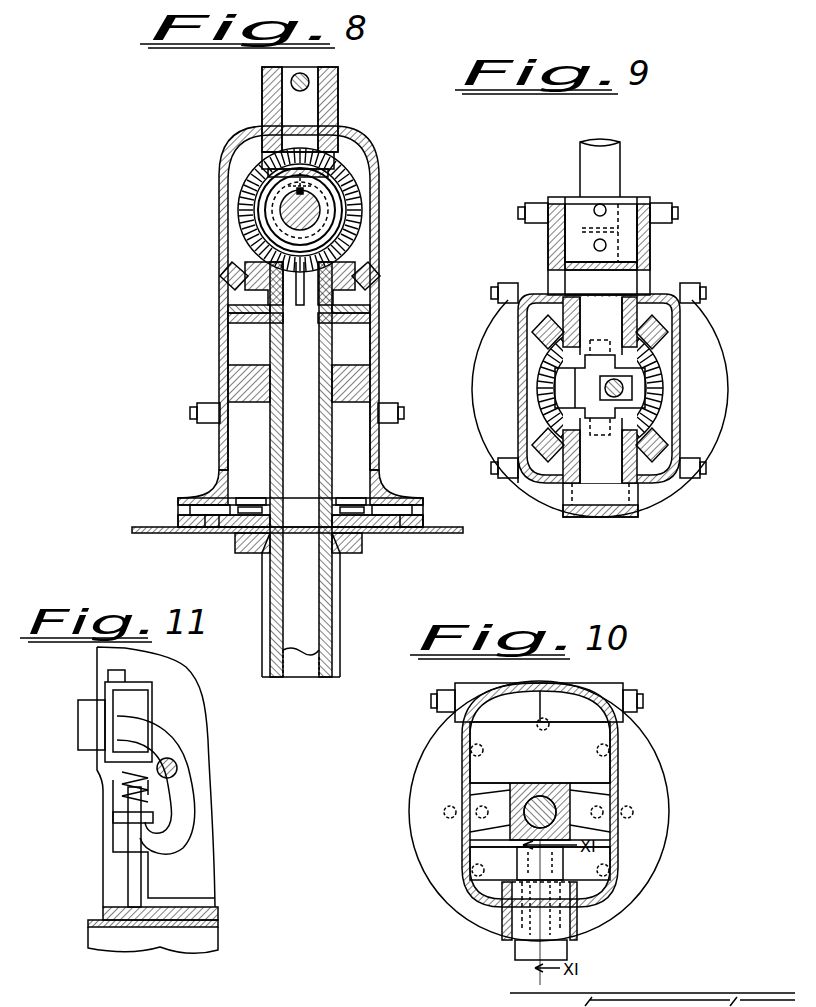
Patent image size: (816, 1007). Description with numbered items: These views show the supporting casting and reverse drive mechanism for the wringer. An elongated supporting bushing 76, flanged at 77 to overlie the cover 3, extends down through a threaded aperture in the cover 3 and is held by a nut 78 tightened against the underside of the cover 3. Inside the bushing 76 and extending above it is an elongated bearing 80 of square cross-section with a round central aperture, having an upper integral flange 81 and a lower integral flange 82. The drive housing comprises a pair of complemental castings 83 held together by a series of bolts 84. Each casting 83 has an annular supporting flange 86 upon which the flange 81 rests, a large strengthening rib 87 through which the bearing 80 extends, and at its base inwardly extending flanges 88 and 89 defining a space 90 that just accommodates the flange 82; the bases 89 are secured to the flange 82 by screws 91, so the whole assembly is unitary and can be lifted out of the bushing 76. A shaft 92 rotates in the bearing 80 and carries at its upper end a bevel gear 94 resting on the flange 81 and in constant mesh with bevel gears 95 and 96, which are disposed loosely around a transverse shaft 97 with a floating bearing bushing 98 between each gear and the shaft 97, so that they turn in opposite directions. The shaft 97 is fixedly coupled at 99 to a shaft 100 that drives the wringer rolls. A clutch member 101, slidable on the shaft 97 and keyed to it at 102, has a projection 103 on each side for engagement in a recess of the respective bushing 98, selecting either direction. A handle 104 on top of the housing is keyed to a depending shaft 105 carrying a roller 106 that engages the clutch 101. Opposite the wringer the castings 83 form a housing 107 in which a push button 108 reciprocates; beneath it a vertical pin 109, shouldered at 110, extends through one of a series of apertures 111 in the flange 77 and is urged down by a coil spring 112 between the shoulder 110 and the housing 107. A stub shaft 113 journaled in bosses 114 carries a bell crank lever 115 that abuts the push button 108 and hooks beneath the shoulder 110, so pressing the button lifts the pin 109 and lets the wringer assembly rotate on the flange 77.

In FIG. 8, the cover 3 is at (142, 527).
In FIG. 11, the cover 3 is at (205, 934).
In FIG. 8, the supporting bushing 76 is at (264, 620).
In FIG. 8, the flange 77 is at (186, 498).
In FIG. 11, the flange 77 is at (180, 907).
In FIG. 8, the nut 78 is at (250, 554).
In FIG. 8, the elongated bearing 80 is at (326, 455).
In FIG. 10, the elongated bearing 80 is at (563, 795).
In FIG. 8, the upper integral flange 81 is at (352, 308).
In FIG. 8, the lower integral flange 82 is at (360, 488).
In FIG. 8, the casting 83 is at (222, 166).
In FIG. 9, the casting 83 is at (676, 392).
In FIG. 10, the casting 83 is at (620, 836).
In FIG. 11, the casting 83 is at (192, 722).
In FIG. 8, the bolt 84 is at (197, 414).
In FIG. 9, the bolt 84 is at (700, 293).
In FIG. 10, the bolt 84 is at (637, 700).
In FIG. 8, the annular supporting flange 86 is at (358, 330).
In FIG. 8, the strengthening rib 87 is at (352, 386).
In FIG. 10, the strengthening rib 87 is at (482, 792).
In FIG. 8, the inwardly extending flange 88 is at (366, 486).
In FIG. 8, the inwardly extending flange 89 is at (424, 510).
In FIG. 8, the space 90 is at (386, 502).
In FIG. 8, the screw 91 is at (362, 540).
In FIG. 8, the shaft 92 is at (305, 600).
In FIG. 10, the shaft 92 is at (540, 800).
In FIG. 8, the bevel gear 94 is at (338, 272).
In FIG. 9, the bevel gear 94 is at (660, 372).
In FIG. 8, the bevel gear 95 is at (333, 170).
In FIG. 9, the bevel gear 95 is at (652, 282).
In FIG. 9, the bevel gear 96 is at (702, 466).
In FIG. 8, the transverse shaft 97 is at (322, 222).
In FIG. 9, the transverse shaft 97 is at (608, 462).
In FIG. 9, the floating bearing bushing 98 is at (566, 492).
In FIG. 9, the coupling 99 is at (651, 200).
In FIG. 9, the shaft 100 is at (604, 158).
In FIG. 8, the clutch member 101 is at (268, 220).
In FIG. 9, the clutch member 101 is at (556, 388).
In FIG. 8, the key 102 is at (262, 206).
In FIG. 9, the projection 103 is at (560, 400).
In FIG. 8, the handle 104 is at (333, 85).
In FIG. 8, the depending shaft 105 is at (305, 122).
In FIG. 8, the roller 106 is at (318, 176).
In FIG. 9, the roller 106 is at (624, 390).
In FIG. 10, the housing 107 is at (580, 922).
In FIG. 11, the housing 107 is at (116, 670).
In FIG. 10, the push button 108 is at (530, 962).
In FIG. 11, the push button 108 is at (90, 728).
In FIG. 11, the vertical pin 109 is at (135, 878).
In FIG. 10, the shoulder 110 is at (625, 890).
In FIG. 11, the shoulder 110 is at (130, 820).
In FIG. 8, the aperture 111 is at (208, 528).
In FIG. 10, the aperture 111 is at (606, 752).
In FIG. 11, the coil spring 112 is at (123, 796).
In FIG. 11, the stub shaft 113 is at (178, 766).
In FIG. 10, the boss 114 is at (492, 870).
In FIG. 10, the bell crank lever 115 is at (512, 926).
In FIG. 11, the bell crank lever 115 is at (190, 805).